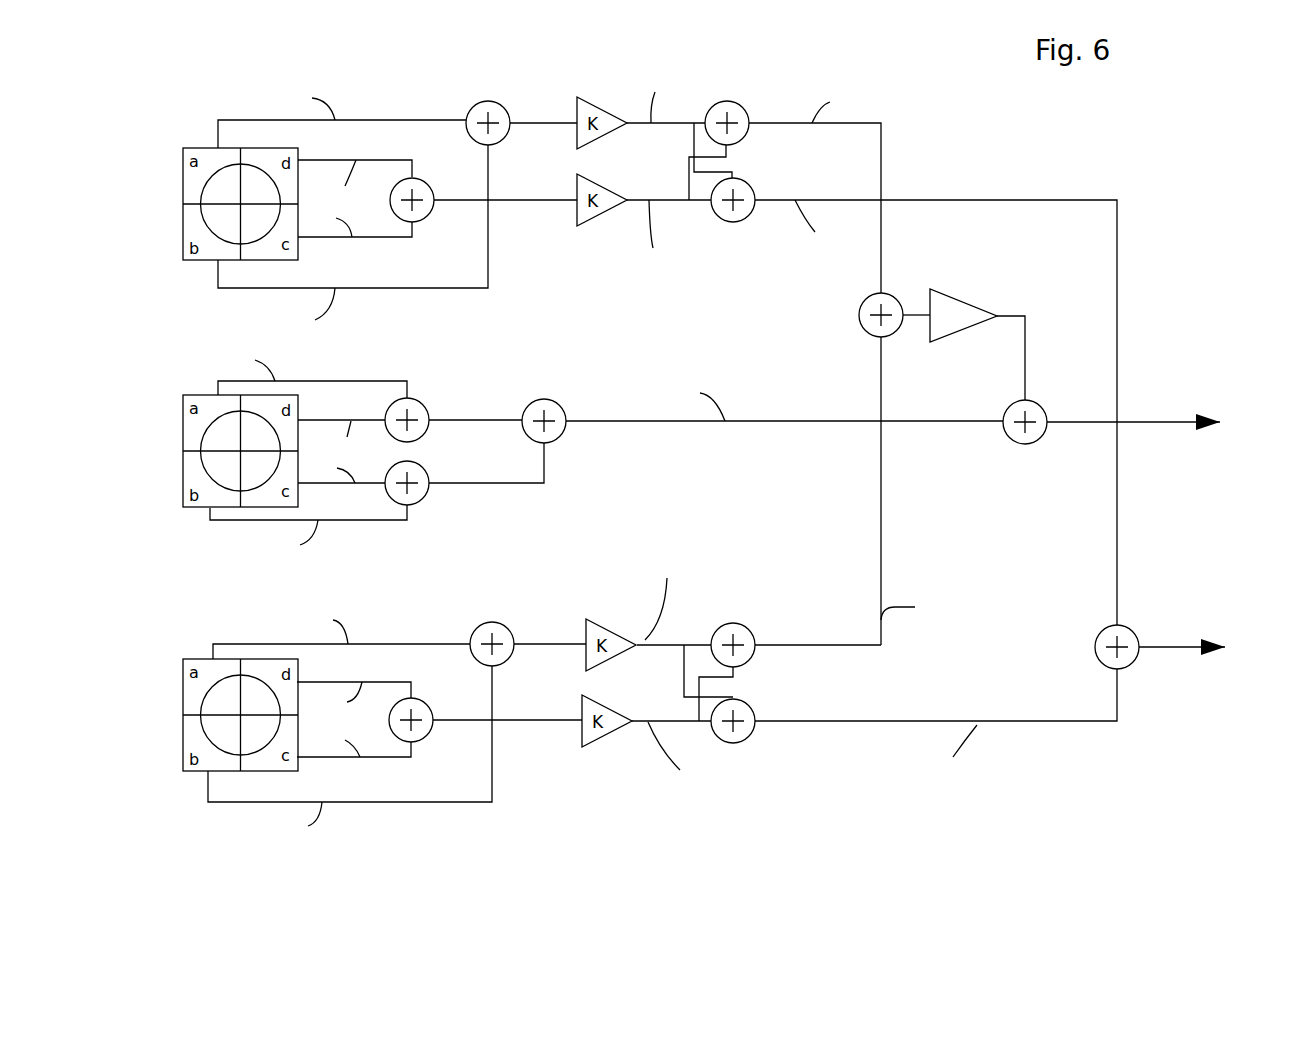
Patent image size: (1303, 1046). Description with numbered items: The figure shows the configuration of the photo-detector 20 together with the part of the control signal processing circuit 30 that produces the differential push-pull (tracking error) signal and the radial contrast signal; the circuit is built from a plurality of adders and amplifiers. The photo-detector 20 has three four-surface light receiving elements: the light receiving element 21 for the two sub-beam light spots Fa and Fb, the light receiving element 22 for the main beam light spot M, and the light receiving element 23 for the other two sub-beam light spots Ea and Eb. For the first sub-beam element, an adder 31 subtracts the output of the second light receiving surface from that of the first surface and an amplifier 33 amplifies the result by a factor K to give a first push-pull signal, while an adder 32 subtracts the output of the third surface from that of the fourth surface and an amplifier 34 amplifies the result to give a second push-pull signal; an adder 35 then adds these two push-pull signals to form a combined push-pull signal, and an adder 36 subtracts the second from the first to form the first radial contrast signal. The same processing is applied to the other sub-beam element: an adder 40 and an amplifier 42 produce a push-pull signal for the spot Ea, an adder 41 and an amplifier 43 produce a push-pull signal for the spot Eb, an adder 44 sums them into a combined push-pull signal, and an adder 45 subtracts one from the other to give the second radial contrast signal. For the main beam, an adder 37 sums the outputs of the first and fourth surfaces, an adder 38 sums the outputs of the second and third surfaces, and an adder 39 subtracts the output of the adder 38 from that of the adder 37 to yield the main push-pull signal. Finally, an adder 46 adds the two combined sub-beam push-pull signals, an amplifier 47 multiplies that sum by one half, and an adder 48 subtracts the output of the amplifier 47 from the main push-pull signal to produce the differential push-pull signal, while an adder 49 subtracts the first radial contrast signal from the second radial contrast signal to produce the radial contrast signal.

The photo-detector 20 is at (63, 396).
The light receiving element 21 is at (183, 193).
The light receiving element 22 is at (183, 428).
The light receiving element 23 is at (218, 715).
The control signal processing circuit 30 is at (746, 30).
The adder 31 is at (505, 110).
The adder 32 is at (432, 214).
The amplifier 33 is at (592, 103).
The amplifier 34 is at (595, 226).
The adder 35 is at (752, 113).
The adder 36 is at (745, 220).
The adder 37 is at (427, 406).
The adder 38 is at (430, 498).
The adder 39 is at (562, 406).
The adder 40 is at (508, 626).
The adder 41 is at (430, 741).
The amplifier 42 is at (600, 630).
The amplifier 43 is at (608, 740).
The adder 44 is at (752, 632).
The adder 45 is at (745, 740).
The adder 46 is at (897, 296).
The amplifier 47 is at (965, 303).
The adder 48 is at (1050, 412).
The adder 49 is at (1135, 635).